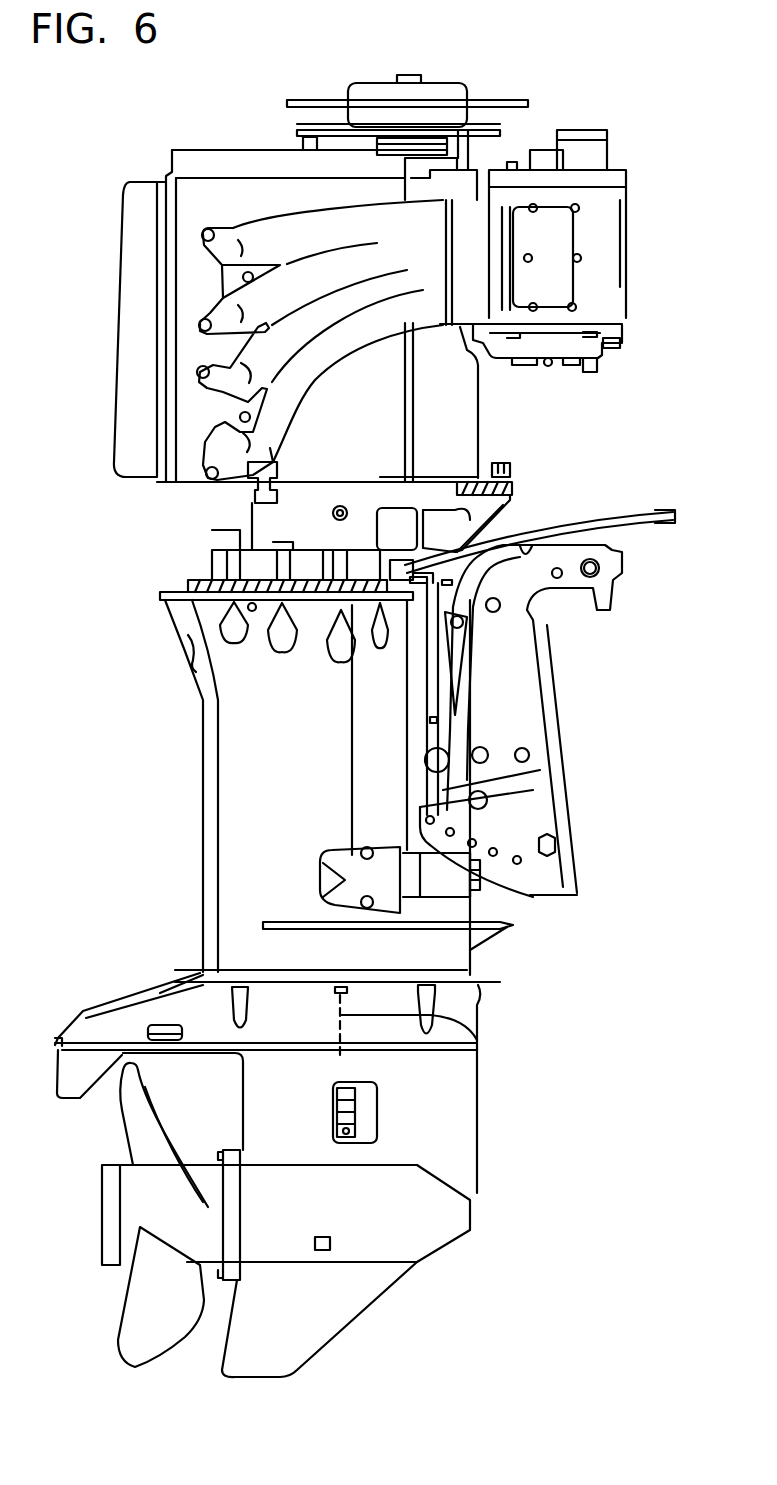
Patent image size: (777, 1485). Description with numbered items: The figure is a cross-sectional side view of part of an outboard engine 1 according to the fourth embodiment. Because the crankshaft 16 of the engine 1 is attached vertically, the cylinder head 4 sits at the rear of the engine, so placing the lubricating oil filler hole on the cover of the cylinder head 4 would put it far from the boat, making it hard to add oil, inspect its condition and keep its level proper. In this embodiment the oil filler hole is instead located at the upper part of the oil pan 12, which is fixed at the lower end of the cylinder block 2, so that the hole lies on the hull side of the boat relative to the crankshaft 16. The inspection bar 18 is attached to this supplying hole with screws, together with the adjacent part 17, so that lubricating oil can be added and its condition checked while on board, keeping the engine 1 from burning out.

The engine 1 is at (262, 145).
The cylinder block 2 is at (468, 397).
The cylinder head 4 is at (185, 247).
The oil pan 12 is at (470, 517).
The crankshaft 16 is at (410, 70).
The mount 17 is at (507, 490).
The inspection bar 18 is at (497, 463).